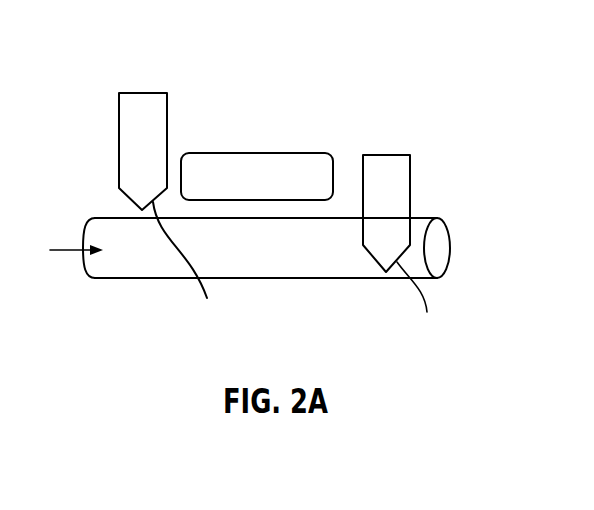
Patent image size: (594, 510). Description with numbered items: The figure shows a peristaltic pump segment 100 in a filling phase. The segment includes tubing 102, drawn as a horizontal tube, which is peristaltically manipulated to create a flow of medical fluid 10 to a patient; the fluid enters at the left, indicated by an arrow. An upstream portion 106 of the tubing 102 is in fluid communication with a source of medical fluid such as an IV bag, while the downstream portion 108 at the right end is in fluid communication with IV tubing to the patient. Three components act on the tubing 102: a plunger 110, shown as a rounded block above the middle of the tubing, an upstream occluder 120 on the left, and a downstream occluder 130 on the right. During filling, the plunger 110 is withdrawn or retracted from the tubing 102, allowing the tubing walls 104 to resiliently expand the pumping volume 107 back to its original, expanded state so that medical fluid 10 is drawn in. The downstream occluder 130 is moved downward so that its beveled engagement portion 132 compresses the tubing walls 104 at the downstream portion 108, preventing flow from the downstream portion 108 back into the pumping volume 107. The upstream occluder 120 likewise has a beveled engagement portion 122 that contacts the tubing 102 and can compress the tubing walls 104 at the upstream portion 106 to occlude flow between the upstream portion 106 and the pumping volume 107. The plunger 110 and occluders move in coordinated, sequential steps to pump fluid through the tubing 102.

The medical fluid 10 is at (63, 248).
The peristaltic pump segment 100 is at (278, 57).
The tubing 102 is at (120, 280).
The tubing walls 104 is at (437, 248).
The upstream portion 106 is at (85, 267).
The pumping volume 107 is at (335, 280).
The downstream portion 108 is at (432, 230).
The plunger 110 is at (265, 158).
The upstream occluder 120 is at (145, 110).
The beveled engagement portion 122 is at (190, 270).
The downstream occluder 130 is at (387, 163).
The beveled engagement portion 132 is at (421, 307).